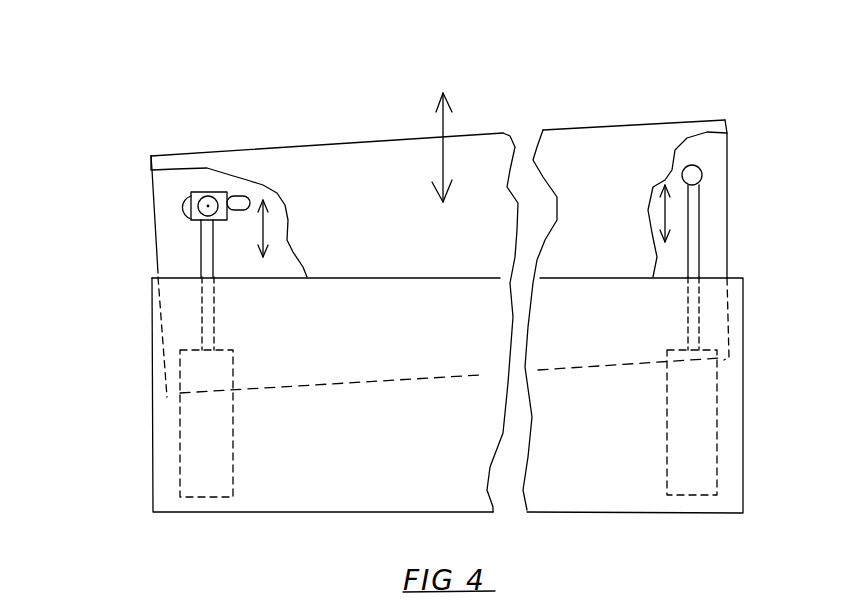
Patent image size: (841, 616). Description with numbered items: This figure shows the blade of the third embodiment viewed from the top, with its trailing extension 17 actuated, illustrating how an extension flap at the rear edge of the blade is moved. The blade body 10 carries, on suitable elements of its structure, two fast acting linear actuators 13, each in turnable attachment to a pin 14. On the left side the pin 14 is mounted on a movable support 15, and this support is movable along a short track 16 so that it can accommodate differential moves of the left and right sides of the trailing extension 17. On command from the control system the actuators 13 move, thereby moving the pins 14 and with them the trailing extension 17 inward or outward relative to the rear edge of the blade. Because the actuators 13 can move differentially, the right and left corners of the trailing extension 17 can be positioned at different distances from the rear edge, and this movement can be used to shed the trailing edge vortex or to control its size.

The base housing 10 is at (608, 488).
The fast acting linear actuator 13 is at (205, 253).
The pin 14 is at (690, 174).
The movable support 15 is at (223, 192).
The short track 16 is at (183, 210).
The trailing extension 17 is at (380, 183).